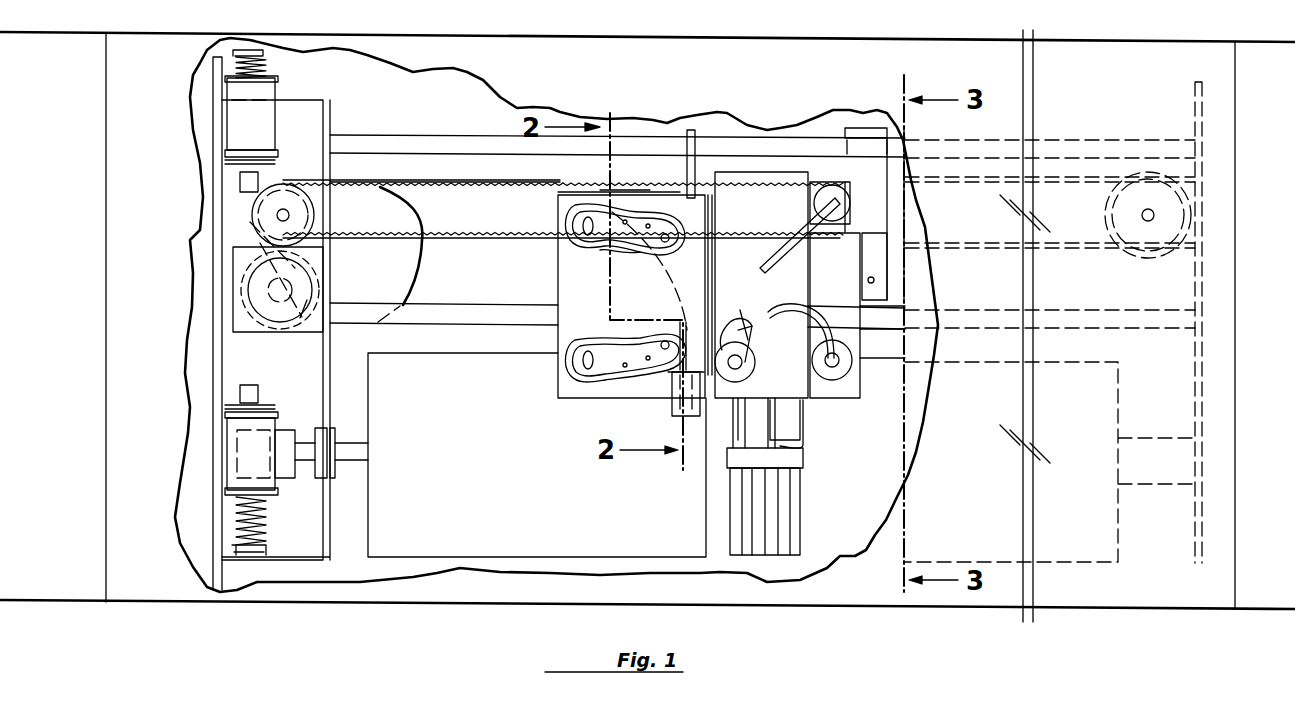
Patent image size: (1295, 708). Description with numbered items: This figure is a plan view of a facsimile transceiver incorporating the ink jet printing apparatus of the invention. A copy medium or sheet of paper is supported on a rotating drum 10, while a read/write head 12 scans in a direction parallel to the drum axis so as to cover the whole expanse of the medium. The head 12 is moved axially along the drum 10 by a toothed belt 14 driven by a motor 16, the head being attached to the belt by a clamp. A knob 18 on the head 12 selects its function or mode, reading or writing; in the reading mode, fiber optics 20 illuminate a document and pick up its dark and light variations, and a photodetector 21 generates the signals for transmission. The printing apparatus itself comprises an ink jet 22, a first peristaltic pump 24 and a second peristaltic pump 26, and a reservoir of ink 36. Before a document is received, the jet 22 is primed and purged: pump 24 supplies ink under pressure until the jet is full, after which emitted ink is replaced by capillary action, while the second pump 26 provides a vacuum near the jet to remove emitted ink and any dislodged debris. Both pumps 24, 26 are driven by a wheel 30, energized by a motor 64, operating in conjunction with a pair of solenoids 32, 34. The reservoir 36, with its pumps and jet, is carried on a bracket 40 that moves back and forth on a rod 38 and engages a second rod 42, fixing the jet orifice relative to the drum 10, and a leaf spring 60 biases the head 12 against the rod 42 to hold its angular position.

The drum 10 is at (444, 503).
The read/write head 12 is at (596, 304).
The toothed belt 14 is at (450, 236).
The motor 16 is at (395, 283).
The knob 18 is at (792, 502).
The fiber optics 20 is at (780, 255).
The photodetector 21 is at (824, 206).
The ink jet 22 is at (672, 408).
The peristaltic pump 24 is at (568, 362).
The second peristaltic pump 26 is at (560, 215).
The wheel 30 is at (246, 281).
The solenoid 32 is at (232, 440).
The solenoid 34 is at (245, 122).
The reservoir of ink 36 is at (580, 256).
The rod 38 is at (912, 312).
The bracket 40 is at (691, 130).
The second rod 42 is at (752, 148).
The leaf spring 60 is at (862, 128).
The motor 64 is at (302, 318).